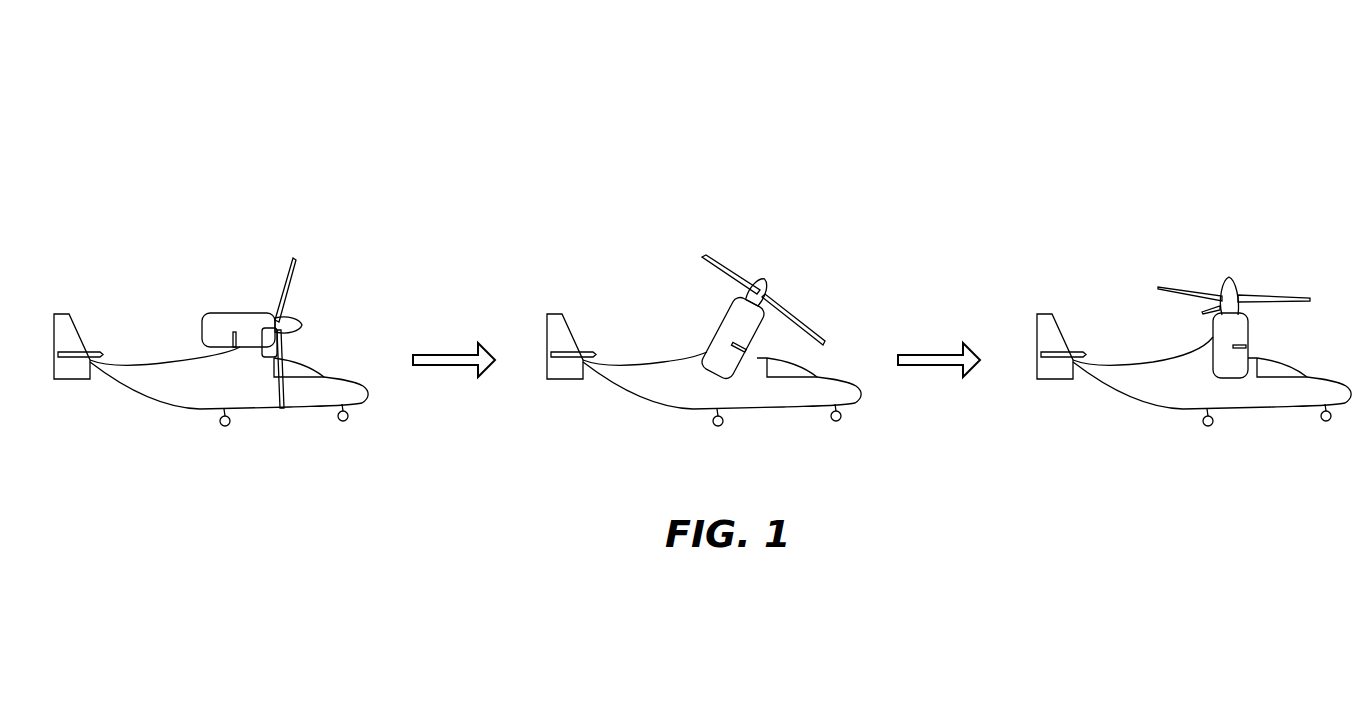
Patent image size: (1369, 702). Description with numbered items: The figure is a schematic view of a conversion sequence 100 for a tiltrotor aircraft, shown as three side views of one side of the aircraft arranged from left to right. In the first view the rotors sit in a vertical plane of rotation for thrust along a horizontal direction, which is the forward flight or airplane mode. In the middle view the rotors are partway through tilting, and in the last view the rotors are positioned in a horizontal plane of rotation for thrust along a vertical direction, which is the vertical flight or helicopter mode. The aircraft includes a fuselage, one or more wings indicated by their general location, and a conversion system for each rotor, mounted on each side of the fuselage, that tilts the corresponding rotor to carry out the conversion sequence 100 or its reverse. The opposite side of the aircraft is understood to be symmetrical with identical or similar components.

The conversion sequence 100 is at (118, 137).